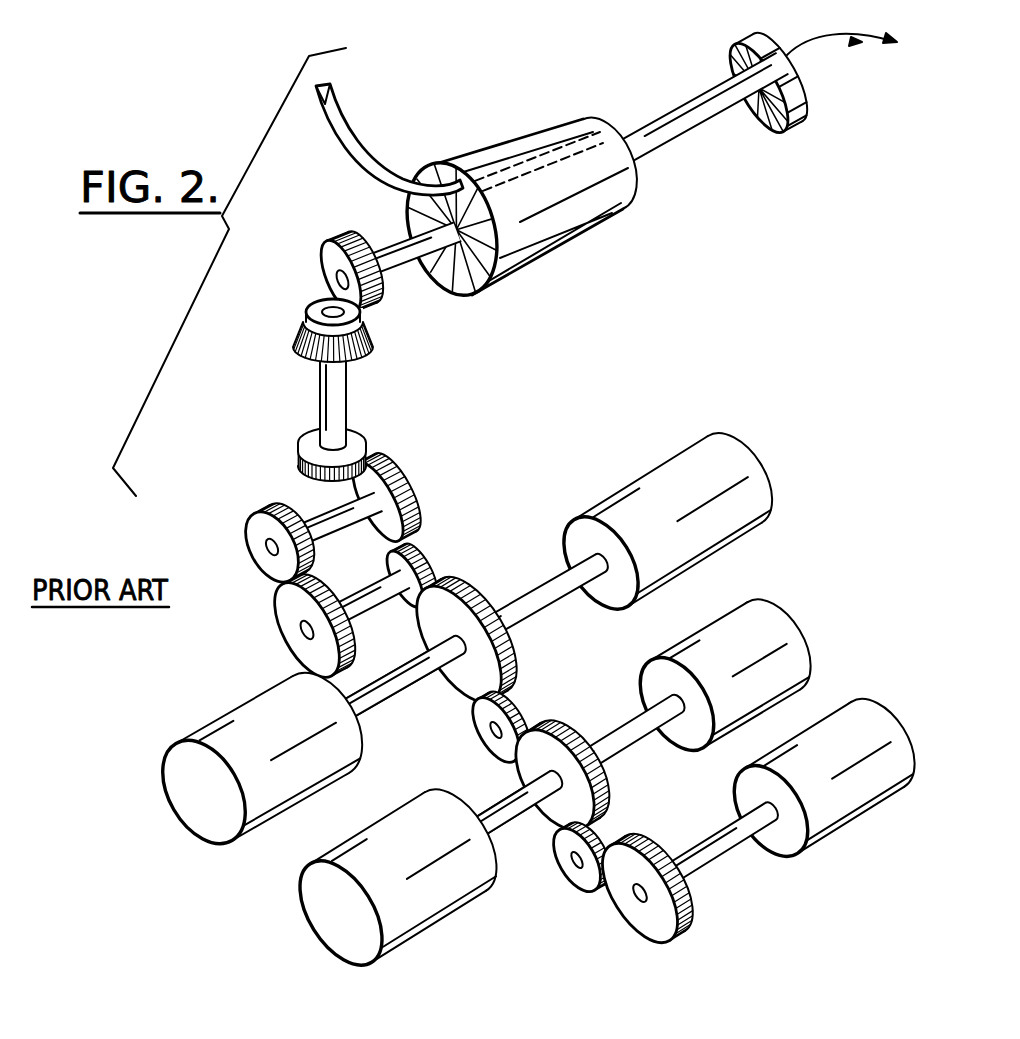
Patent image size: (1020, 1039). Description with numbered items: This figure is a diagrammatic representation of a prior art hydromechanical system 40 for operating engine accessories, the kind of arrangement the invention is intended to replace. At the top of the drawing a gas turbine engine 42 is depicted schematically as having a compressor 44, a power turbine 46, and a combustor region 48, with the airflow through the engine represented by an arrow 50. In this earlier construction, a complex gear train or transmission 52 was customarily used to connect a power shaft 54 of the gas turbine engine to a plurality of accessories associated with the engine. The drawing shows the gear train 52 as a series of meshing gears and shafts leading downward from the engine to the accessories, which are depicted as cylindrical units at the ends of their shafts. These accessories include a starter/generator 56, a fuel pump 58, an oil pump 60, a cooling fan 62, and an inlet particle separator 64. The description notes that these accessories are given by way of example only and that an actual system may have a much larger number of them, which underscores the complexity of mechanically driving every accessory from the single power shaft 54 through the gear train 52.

The hydromechanical system 40 is at (535, 601).
The gas turbine engine 42 is at (606, 165).
The compressor 44 is at (495, 148).
The power turbine 46 is at (801, 96).
The combustor region 48 is at (626, 86).
The arrow 50 is at (368, 138).
The gear train or transmission 52 is at (463, 534).
The power shaft 54 is at (717, 123).
The starter/generator 56 is at (315, 897).
The fuel pump 58 is at (770, 637).
The oil pump 60 is at (202, 738).
The cooling fan 62 is at (739, 481).
The inlet particle separator 64 is at (860, 718).